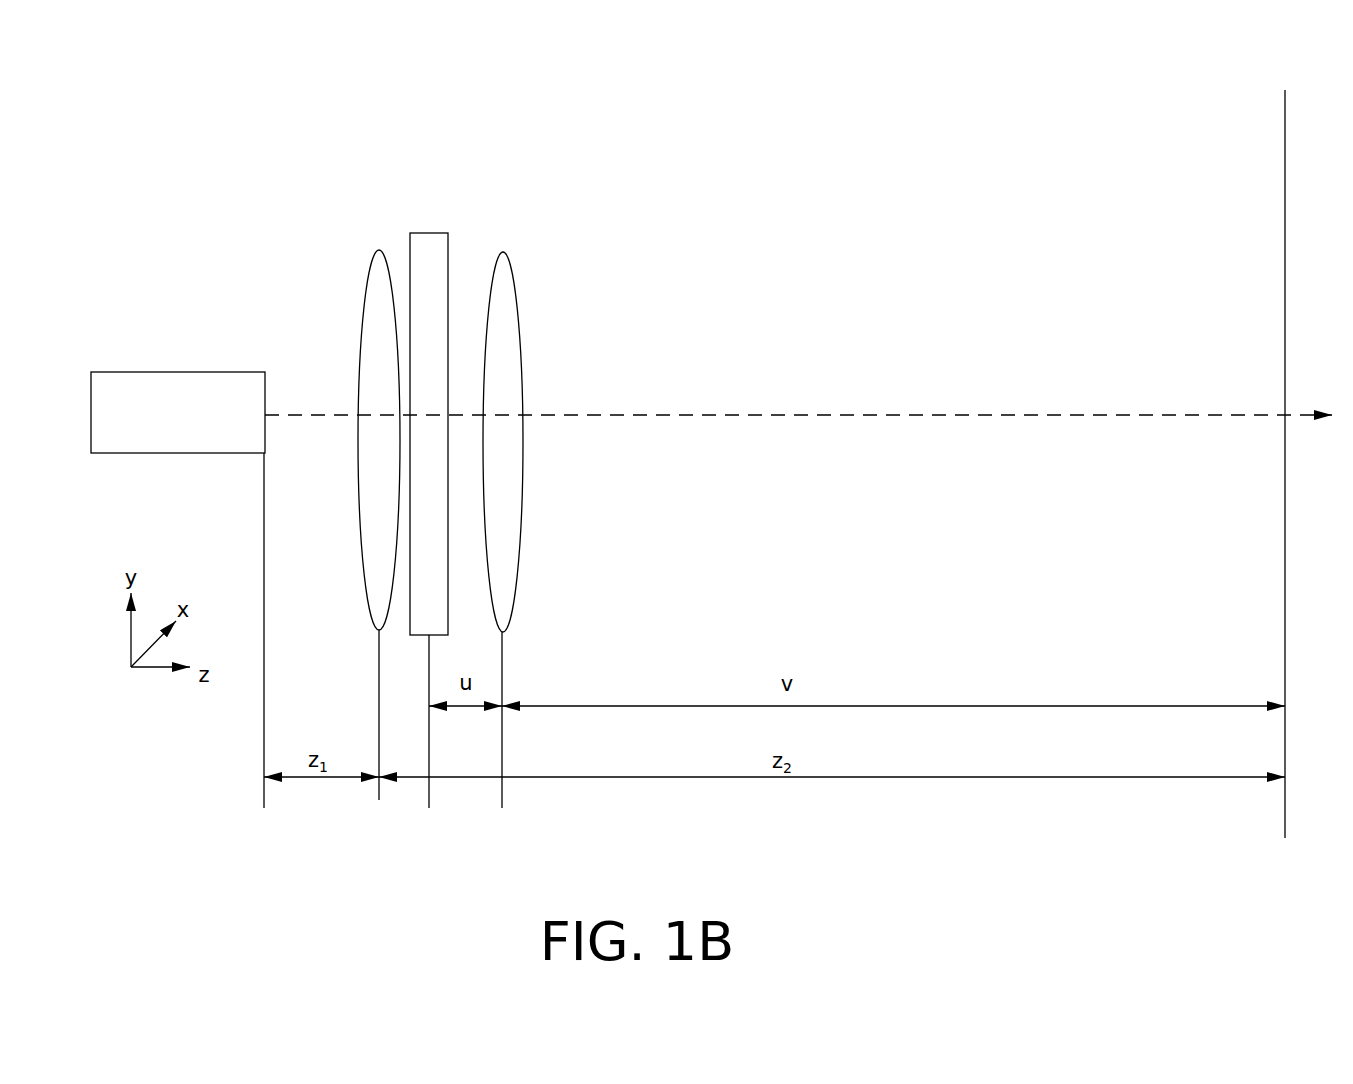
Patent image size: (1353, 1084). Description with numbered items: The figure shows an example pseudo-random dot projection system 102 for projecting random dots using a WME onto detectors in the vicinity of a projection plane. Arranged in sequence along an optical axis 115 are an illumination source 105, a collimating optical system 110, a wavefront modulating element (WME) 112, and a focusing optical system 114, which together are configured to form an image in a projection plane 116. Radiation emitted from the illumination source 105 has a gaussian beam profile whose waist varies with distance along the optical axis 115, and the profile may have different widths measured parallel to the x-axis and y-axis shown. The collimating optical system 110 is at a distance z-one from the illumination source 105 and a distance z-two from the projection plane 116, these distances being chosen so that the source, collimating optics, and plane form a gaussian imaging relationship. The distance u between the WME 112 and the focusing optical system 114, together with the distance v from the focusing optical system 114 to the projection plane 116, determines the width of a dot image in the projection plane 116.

The pseudo-random dot projection system 102 is at (306, 88).
The illumination source 105 is at (178, 412).
The collimating optical system 110 is at (366, 278).
The wavefront modulating element (WME) 112 is at (431, 233).
The focusing optical system 114 is at (511, 258).
The optical axis 115 is at (823, 413).
The projection plane 116 is at (1284, 238).